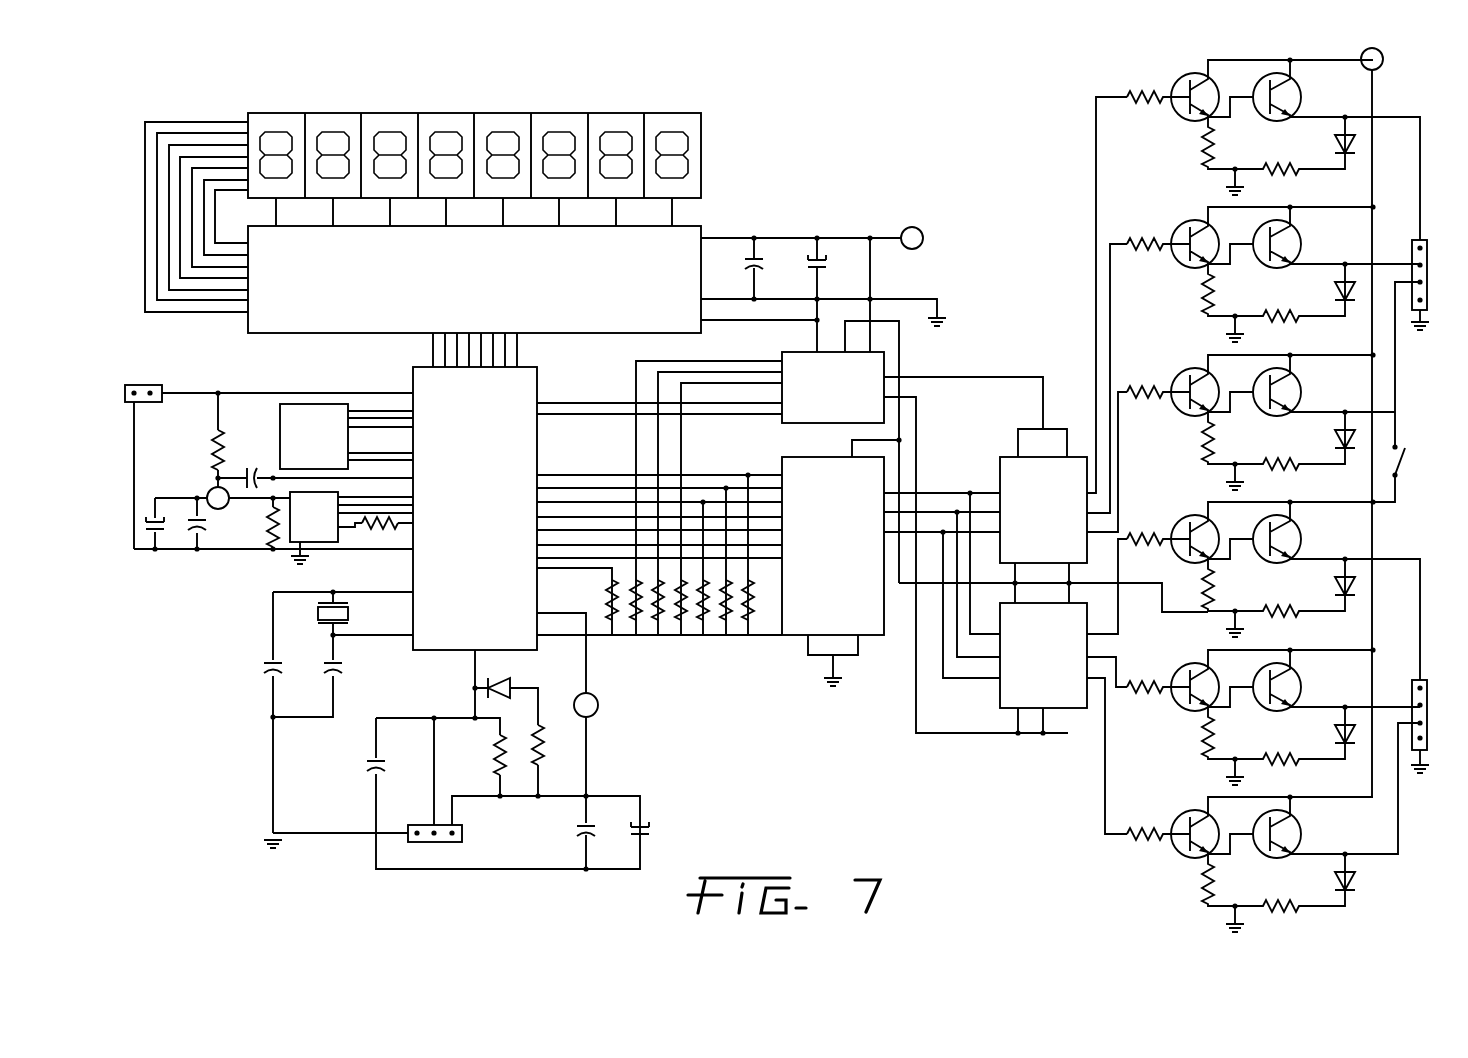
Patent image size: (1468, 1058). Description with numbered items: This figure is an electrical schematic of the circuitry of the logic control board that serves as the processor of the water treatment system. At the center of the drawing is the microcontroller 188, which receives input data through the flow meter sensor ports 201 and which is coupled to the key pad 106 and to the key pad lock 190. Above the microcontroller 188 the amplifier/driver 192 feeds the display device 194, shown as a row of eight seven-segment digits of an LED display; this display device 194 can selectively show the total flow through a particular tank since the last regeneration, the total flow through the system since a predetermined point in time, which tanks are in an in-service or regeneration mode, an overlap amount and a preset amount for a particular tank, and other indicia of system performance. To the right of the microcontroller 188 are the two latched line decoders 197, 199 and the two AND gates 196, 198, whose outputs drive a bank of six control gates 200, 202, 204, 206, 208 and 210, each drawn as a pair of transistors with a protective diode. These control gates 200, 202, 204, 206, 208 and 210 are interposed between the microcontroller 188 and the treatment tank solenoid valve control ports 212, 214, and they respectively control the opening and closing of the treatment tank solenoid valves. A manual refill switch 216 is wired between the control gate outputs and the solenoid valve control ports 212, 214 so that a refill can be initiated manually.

The key pad 106 is at (314, 436).
The microcontroller 188 is at (475, 508).
The key pad lock 190 is at (147, 383).
The amplifier/driver 192 is at (474, 279).
The display device 194 is at (700, 165).
The AND gate 196 is at (1043, 510).
The latched line decoder 197 is at (833, 387).
The AND gate 198 is at (1043, 655).
The latched line decoder 199 is at (833, 546).
The control gate 200 is at (1198, 146).
The flow meter sensor ports 201 is at (443, 842).
The control gate 202 is at (1197, 295).
The control gate 204 is at (1197, 441).
The control gate 206 is at (1193, 569).
The control gate 208 is at (1193, 718).
The control gate 210 is at (1192, 870).
The treatment tank solenoid valve control port 212 is at (1428, 290).
The treatment tank solenoid valve control port 214 is at (1412, 697).
The manual refill switch 216 is at (1408, 472).